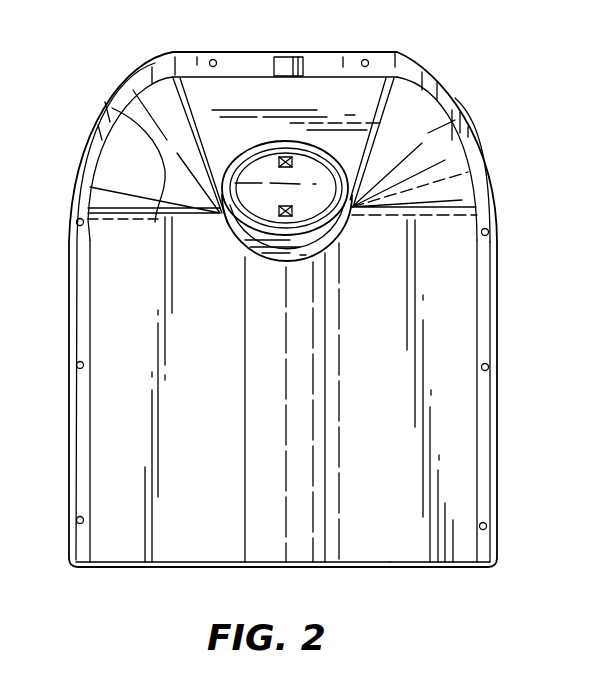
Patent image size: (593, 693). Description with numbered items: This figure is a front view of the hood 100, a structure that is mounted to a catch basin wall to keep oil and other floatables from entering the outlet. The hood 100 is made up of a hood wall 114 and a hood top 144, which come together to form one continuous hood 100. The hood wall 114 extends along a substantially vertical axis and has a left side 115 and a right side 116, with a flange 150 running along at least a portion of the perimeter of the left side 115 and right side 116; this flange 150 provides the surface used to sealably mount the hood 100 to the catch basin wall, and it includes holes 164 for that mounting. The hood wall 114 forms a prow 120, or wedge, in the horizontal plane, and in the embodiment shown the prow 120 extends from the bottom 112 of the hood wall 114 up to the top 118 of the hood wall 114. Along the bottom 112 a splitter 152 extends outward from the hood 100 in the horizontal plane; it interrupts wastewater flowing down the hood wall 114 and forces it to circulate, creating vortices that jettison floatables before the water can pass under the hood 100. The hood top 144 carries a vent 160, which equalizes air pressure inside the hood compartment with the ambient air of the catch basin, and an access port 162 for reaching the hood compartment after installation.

The hood 100 is at (460, 70).
The bottom of the hood wall 112 is at (310, 570).
The hood wall 114 is at (193, 473).
The left side 115 is at (97, 305).
The right side 116 is at (453, 333).
The top of the hood wall 118 is at (112, 108).
The prow 120 is at (283, 433).
The hood top 144 is at (366, 127).
The flange 150 is at (497, 288).
The splitter 152 is at (393, 568).
The vent 160 is at (287, 60).
The access port 162 is at (293, 177).
The holes 164 is at (211, 61).